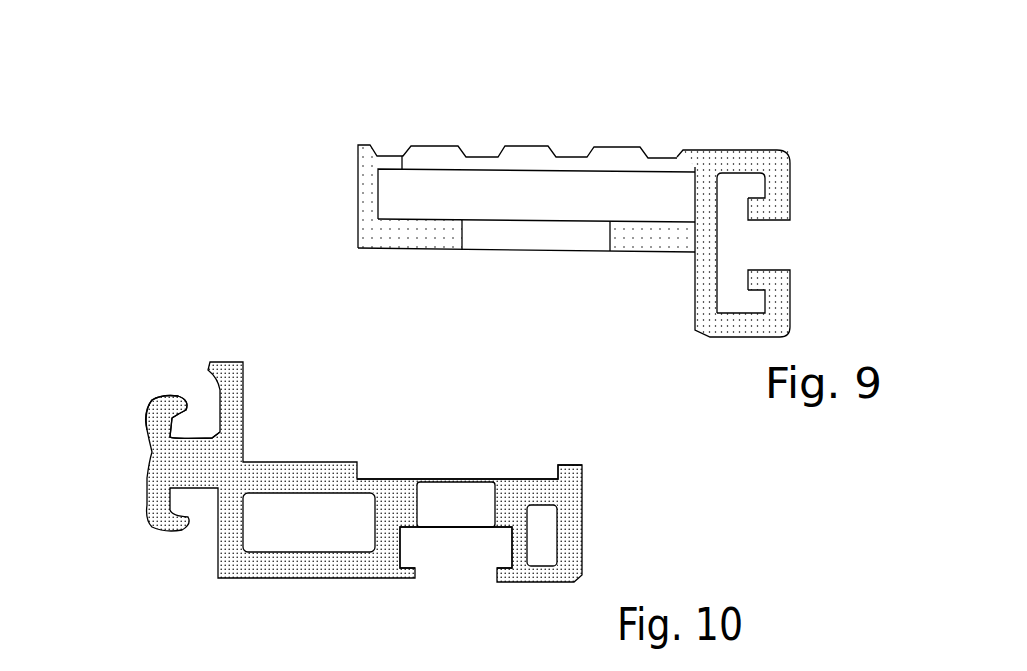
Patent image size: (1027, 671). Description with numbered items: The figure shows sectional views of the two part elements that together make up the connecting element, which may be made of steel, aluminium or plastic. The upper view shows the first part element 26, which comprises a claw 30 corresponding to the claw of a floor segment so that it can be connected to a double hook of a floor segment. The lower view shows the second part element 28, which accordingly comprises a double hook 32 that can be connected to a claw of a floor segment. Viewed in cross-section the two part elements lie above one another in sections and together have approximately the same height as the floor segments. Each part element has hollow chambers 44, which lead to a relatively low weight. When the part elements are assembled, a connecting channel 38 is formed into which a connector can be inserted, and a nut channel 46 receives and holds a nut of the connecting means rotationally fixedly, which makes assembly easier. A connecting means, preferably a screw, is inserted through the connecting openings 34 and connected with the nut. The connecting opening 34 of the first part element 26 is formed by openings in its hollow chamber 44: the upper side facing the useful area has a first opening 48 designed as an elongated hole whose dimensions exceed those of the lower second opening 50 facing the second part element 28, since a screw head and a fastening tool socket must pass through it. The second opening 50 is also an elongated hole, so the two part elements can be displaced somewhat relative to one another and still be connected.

In FIG. 9, the first part element 26 is at (345, 189).
In FIG. 9, the first opening 48 is at (612, 160).
In FIG. 9, the second opening 50 is at (547, 237).
In FIG. 9, the claw 30 is at (713, 325).
In FIG. 10, the second part element 28 is at (610, 523).
In FIG. 10, the double hook 32 is at (157, 432).
In FIG. 10, the connecting channel 38 is at (543, 473).
In FIG. 10, the hollow chamber 44 is at (287, 531).
In FIG. 10, the nut channel 46 is at (443, 547).
In FIG. 10, the connecting opening 34 is at (445, 500).